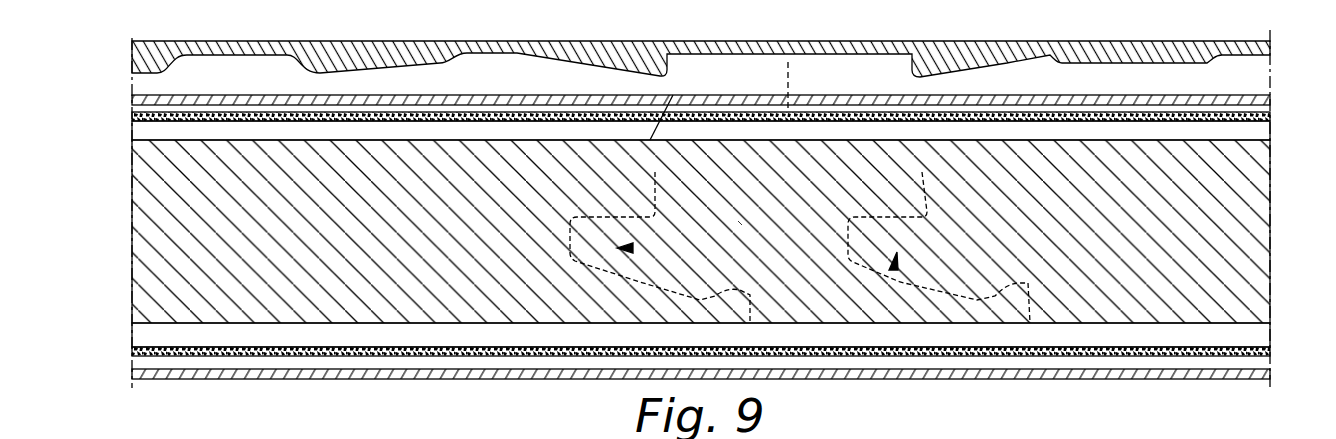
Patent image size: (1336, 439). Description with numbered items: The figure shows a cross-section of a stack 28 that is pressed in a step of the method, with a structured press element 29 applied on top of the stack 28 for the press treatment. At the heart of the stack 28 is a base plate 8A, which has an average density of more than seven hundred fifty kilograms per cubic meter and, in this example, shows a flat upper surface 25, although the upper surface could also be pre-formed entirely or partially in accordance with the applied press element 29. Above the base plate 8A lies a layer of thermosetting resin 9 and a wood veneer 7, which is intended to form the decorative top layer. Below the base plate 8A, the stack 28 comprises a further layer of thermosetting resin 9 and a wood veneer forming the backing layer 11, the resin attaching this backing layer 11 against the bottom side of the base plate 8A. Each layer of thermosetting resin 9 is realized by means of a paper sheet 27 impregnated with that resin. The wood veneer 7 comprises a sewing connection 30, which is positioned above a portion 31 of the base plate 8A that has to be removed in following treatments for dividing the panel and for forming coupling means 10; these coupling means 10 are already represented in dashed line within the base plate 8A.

The wood veneer 7 is at (1203, 100).
The base plate 8A is at (150, 258).
The layer of thermosetting resin 9 is at (133, 118).
The coupling means 10 is at (630, 249).
The backing layer 11 is at (220, 373).
The upper surface 25 is at (673, 95).
The paper sheet 27 is at (133, 127).
The stack 28 is at (1278, 86).
The structured press element 29 is at (1250, 45).
The sewing connection 30 is at (790, 92).
The portion 31 is at (740, 223).